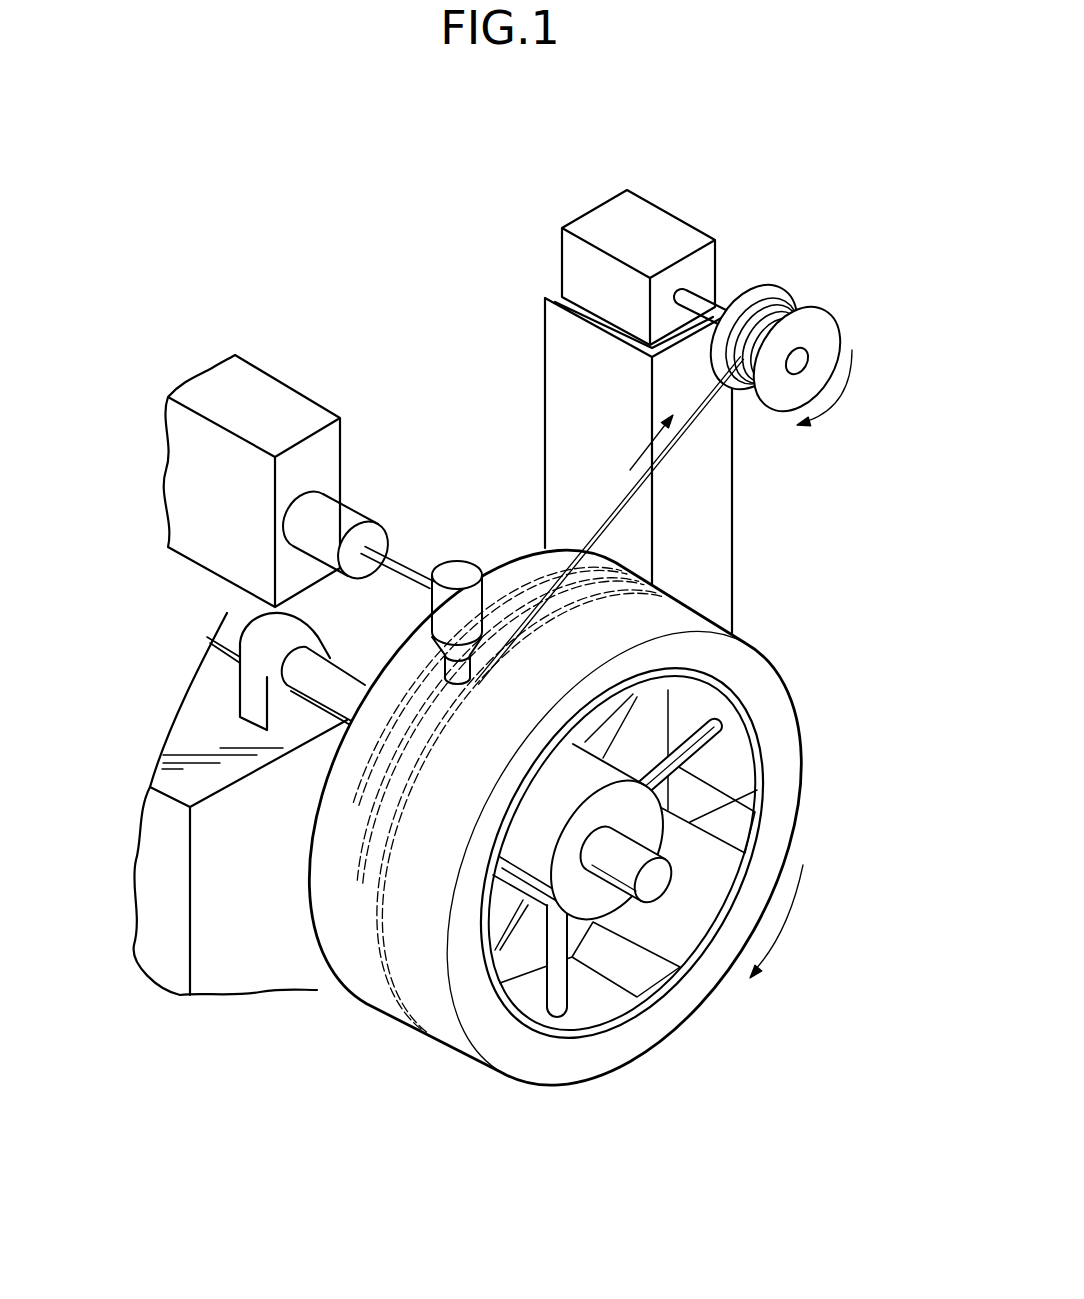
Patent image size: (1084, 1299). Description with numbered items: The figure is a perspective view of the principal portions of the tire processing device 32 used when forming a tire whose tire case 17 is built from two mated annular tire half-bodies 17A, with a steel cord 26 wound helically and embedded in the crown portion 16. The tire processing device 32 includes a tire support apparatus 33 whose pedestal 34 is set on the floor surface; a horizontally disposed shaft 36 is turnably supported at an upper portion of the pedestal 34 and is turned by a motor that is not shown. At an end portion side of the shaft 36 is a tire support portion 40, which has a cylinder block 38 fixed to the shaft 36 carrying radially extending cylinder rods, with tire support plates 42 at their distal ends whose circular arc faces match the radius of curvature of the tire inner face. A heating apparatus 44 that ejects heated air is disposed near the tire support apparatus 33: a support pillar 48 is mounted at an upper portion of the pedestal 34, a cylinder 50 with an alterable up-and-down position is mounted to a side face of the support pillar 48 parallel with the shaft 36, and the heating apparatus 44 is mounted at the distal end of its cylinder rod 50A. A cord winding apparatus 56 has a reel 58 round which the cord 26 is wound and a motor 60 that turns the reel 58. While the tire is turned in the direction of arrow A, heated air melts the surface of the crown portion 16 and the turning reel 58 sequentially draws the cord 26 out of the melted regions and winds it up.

The crown portion 16 is at (337, 920).
The tire case 17 is at (545, 1098).
The tire half-body 17A is at (372, 988).
The cord 26 is at (690, 445).
The tire processing device 32 is at (346, 235).
The tire support apparatus 33 is at (190, 633).
The pedestal 34 is at (160, 890).
The shaft 36 is at (245, 622).
The cylinder block 38 is at (638, 813).
The tire support portion 40 is at (598, 888).
The tire support plate 42 is at (703, 903).
The heating apparatus 44 is at (460, 565).
The support pillar 48 is at (280, 400).
The cylinder 50 is at (348, 500).
The cylinder rod 50A is at (400, 565).
The cord winding apparatus 56 is at (610, 178).
The reel 58 is at (823, 337).
The motor 60 is at (670, 228).
The arrow A is at (783, 917).